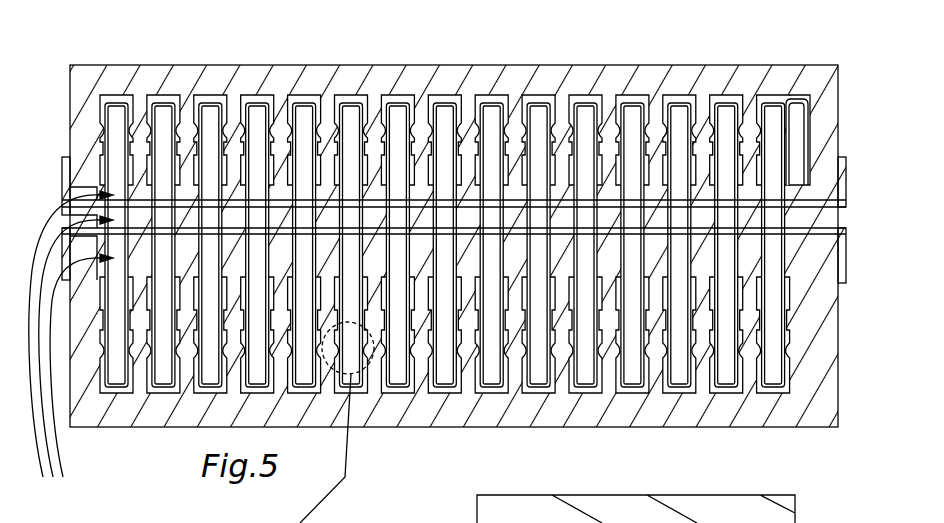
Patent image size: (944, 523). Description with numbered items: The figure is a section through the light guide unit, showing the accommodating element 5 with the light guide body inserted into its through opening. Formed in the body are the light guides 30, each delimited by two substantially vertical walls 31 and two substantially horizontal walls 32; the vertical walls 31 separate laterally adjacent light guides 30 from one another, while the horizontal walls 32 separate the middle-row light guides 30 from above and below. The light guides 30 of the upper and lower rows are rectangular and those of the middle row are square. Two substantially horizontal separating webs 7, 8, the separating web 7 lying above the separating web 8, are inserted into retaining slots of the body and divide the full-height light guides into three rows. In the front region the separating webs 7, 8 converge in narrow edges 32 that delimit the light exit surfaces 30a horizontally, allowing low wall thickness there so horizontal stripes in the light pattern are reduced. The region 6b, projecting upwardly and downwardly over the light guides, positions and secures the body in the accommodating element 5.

The accommodating element 5 is at (85, 78).
The separating web 7 is at (185, 230).
The separating web 8 is at (397, 220).
The region 6b is at (447, 165).
The light guide 30 is at (300, 195).
The light exit surface 30a is at (71, 347).
The vertical separating wall 31 is at (494, 218).
The horizontal separating wall 32 is at (627, 110).